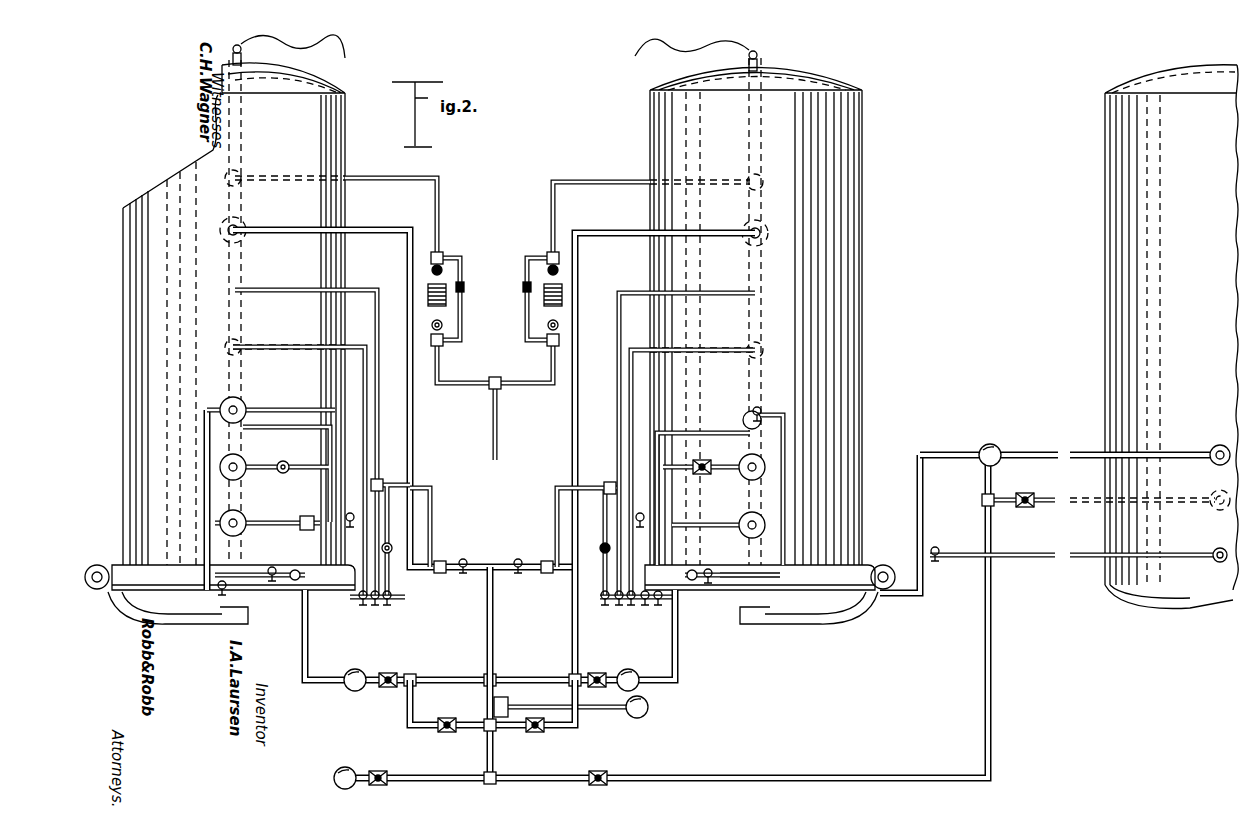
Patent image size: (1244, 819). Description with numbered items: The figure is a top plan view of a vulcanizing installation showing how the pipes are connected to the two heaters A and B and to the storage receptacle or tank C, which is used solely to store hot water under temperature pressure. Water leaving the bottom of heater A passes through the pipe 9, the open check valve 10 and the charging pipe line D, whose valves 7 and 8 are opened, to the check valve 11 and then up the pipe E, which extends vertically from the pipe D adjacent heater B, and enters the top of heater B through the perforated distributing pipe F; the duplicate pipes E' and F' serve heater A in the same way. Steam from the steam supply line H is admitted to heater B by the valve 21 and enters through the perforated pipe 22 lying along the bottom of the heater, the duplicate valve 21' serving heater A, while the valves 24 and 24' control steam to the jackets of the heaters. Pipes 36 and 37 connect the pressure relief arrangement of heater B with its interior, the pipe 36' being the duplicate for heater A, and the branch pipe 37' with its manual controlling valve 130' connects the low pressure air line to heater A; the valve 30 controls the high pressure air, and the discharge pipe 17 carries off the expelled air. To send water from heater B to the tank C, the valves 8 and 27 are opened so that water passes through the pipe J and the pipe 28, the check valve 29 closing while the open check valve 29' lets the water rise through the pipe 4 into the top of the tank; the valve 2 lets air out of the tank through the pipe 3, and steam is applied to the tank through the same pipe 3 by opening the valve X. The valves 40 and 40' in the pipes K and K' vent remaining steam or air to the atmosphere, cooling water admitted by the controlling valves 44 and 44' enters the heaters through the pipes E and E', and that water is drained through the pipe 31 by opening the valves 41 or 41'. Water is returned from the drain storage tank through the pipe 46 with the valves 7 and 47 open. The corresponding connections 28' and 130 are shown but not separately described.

The heater A is at (220, 329).
The heater B is at (765, 331).
The storage receptacle C is at (1171, 337).
The pipe E is at (646, 456).
The pipe E' is at (404, 398).
The perforated pipe F is at (497, 324).
The perforated pipe F' is at (272, 487).
The steam supply line pipe H is at (628, 468).
The pipe K is at (709, 495).
The pipe K' is at (259, 610).
The charging pipe line D is at (482, 708).
The pipe J is at (486, 752).
The valve X is at (655, 605).
The valve 2 is at (918, 598).
The pipe 3 is at (1021, 457).
The pipe 4 is at (1080, 455).
The valve 7 is at (447, 733).
The valve 8 is at (533, 733).
The pipe 9 is at (330, 690).
The check valve 10 is at (357, 691).
The check valve 11 is at (628, 669).
The discharge pipe 17 is at (493, 636).
The valve 21 is at (627, 616).
The valve 21' is at (353, 625).
The perforated pipe 22 is at (755, 382).
The valve 24 is at (651, 623).
The valve 24' is at (342, 614).
The valve 27 is at (600, 770).
The pipe 28 is at (736, 619).
The pipe into storage tank 28' is at (1078, 541).
The check valve 29 is at (1106, 512).
The check valve 29' is at (977, 445).
The valve 30 is at (614, 606).
The drain pipe 31 is at (645, 711).
The pipe 36 is at (568, 539).
The pipe 36' is at (417, 538).
The pipe 37 is at (670, 445).
The branch pipe 37' is at (318, 443).
The valve 40 is at (736, 602).
The valve 40' is at (260, 560).
The valve 41 is at (595, 662).
The valve 41' is at (368, 665).
The controlling valve 44 is at (530, 552).
The controlling valve 44' is at (452, 552).
The pipe 46 is at (334, 778).
The valve 47 is at (378, 770).
The manifold 130 is at (606, 599).
The manual controlling valve 130' is at (409, 605).